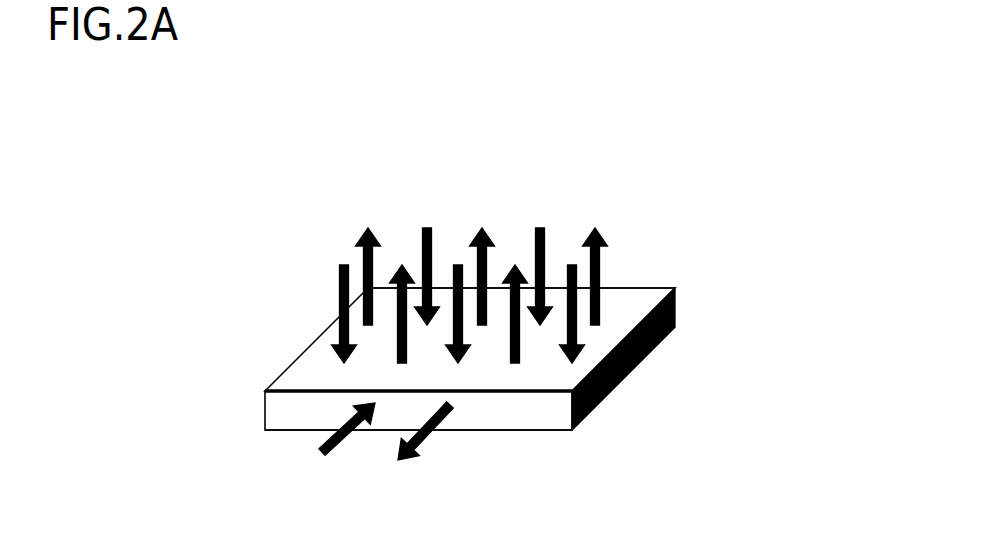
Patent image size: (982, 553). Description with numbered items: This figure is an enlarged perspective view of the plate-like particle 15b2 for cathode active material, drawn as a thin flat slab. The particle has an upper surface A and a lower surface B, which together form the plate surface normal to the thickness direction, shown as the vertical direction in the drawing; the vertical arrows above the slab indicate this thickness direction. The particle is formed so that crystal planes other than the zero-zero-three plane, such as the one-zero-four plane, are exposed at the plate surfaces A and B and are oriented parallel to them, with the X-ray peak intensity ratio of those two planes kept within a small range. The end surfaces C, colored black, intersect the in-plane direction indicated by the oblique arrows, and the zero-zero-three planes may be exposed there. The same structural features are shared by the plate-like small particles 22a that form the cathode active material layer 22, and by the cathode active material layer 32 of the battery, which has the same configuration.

The plate-like particle for cathode active material 15b2 is at (553, 324).
The cathode active material layer 22 is at (553, 324).
The plate-like small particles 22a is at (553, 324).
The cathode active material layer 32 is at (753, 217).
The upper surface A is at (632, 289).
The lower surface B is at (452, 431).
The end surfaces C is at (645, 357).